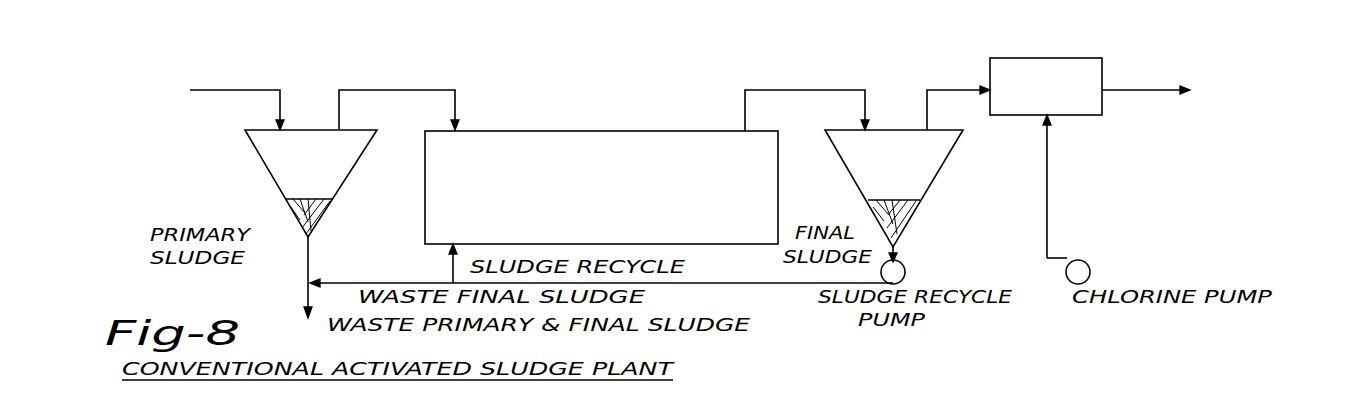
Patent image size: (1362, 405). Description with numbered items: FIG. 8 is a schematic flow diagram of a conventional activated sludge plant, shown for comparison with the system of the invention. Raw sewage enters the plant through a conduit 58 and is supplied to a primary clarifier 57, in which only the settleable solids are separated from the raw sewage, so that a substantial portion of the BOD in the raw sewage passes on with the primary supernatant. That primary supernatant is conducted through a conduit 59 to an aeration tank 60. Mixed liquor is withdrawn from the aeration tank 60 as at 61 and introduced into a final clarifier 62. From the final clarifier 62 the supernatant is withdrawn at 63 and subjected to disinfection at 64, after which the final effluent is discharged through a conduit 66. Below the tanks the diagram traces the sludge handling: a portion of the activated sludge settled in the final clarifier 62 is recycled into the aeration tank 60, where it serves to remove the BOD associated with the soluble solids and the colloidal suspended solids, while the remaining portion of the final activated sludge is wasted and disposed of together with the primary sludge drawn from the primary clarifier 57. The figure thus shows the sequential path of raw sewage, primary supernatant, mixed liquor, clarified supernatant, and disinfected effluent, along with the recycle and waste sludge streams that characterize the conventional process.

The primary clarifier 57 is at (272, 177).
The conduit 58 is at (205, 89).
The conduit 59 is at (458, 105).
The aeration tank 60 is at (632, 128).
The mixed liquor withdrawal 61 is at (782, 91).
The final clarifier 62 is at (930, 188).
The supernatant withdrawal 63 is at (948, 88).
The disinfection 64 is at (1078, 115).
The conduit 66 is at (1147, 90).